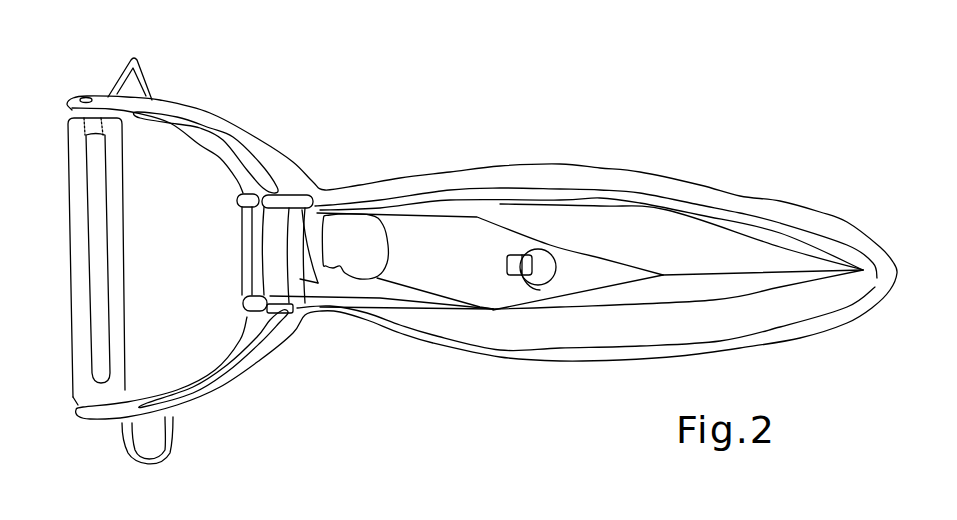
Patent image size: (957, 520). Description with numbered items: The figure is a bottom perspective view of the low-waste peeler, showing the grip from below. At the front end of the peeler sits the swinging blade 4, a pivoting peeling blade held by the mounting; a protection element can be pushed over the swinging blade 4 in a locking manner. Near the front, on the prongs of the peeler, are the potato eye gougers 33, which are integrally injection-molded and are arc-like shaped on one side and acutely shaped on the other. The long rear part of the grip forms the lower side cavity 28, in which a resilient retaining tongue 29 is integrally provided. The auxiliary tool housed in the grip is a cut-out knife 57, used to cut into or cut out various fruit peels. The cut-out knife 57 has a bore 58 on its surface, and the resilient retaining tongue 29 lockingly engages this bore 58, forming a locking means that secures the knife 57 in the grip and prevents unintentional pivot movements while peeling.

The swinging blade 4 is at (70, 251).
The lower side cavity 28 is at (610, 327).
The resilient retaining tongue 29 is at (517, 252).
The potato eye gougers 33 is at (142, 62).
The cut-out knife 57 is at (419, 250).
The bore 58 is at (542, 256).